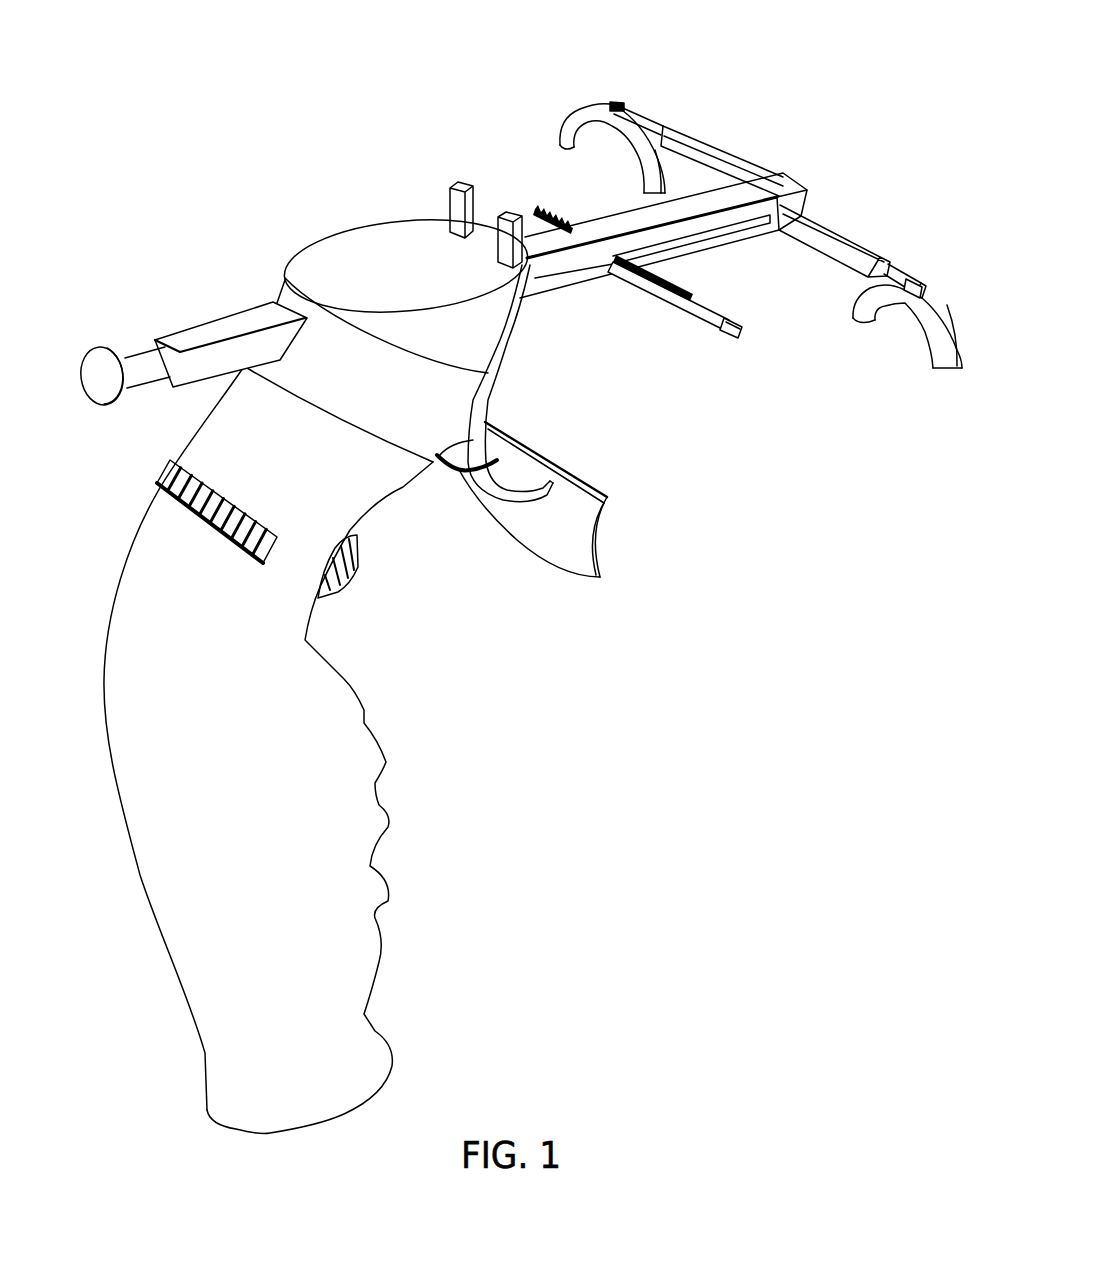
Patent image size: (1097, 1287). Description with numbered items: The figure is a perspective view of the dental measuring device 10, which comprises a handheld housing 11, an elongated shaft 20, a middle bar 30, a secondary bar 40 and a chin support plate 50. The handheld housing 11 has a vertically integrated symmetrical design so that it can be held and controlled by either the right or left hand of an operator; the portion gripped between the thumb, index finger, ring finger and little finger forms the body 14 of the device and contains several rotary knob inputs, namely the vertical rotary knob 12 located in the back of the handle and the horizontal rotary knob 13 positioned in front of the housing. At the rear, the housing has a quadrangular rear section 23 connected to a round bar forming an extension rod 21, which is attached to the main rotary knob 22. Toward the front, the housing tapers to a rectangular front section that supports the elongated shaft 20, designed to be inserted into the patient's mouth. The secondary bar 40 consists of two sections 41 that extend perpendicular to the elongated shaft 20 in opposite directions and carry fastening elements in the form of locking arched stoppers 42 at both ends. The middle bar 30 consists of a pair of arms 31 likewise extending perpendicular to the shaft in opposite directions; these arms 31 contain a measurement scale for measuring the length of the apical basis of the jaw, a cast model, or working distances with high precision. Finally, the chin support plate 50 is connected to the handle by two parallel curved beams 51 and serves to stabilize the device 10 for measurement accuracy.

The dental measuring device 10 is at (316, 188).
The handheld housing 11 is at (373, 870).
The vertical rotary knob 12 is at (157, 488).
The horizontal rotary knob 13 is at (343, 590).
The body 14 is at (153, 925).
The elongated shaft 20 is at (632, 208).
The extension rod 21 is at (147, 348).
The main rotary knob 22 is at (82, 400).
The quadrangular rear section 23 is at (247, 308).
The middle bar 30 is at (723, 337).
The arms 31 is at (652, 290).
The secondary bar 40 is at (720, 137).
The sections 41 is at (637, 110).
The locking arched stoppers 42 is at (582, 103).
The chin support plate 50 is at (607, 557).
The curved beams 51 is at (495, 398).